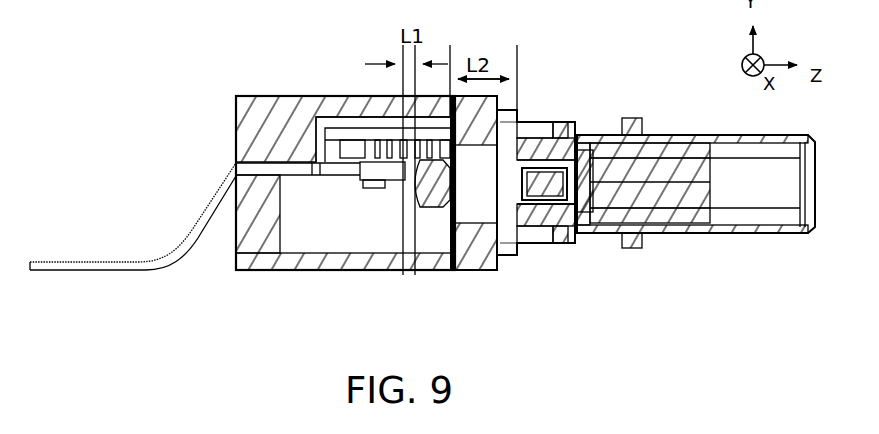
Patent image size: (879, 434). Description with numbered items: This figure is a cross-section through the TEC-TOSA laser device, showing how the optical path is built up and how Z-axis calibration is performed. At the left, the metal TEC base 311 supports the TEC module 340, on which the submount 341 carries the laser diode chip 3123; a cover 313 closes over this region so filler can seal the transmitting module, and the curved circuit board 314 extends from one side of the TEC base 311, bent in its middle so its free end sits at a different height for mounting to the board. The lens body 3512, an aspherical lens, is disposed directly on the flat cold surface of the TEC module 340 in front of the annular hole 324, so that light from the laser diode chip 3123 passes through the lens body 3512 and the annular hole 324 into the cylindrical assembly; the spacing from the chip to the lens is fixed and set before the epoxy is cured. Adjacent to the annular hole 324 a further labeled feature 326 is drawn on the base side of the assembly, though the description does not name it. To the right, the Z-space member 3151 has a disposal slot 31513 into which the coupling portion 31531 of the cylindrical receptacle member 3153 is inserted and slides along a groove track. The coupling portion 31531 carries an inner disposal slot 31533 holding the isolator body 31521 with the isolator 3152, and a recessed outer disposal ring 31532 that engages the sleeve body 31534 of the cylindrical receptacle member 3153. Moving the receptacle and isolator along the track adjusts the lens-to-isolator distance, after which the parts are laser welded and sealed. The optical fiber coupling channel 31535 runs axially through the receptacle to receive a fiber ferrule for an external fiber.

The TEC base 311 is at (258, 113).
The cover 313 is at (293, 260).
The curved circuit board 314 is at (97, 262).
The TEC module 340 is at (378, 137).
The submount 341 is at (365, 182).
The laser diode chip 3123 is at (390, 188).
The lens body 3512 is at (417, 205).
The annular hole 324 is at (478, 257).
The neck portion 326 is at (498, 260).
The Z-space member 3151 is at (608, 214).
The isolator 3152 is at (530, 140).
The coupling portion 31531 is at (547, 165).
The inner disposal slot 31533 is at (575, 132).
The cylindrical receptacle member 3153 is at (688, 127).
The disposal slot 31513 is at (543, 243).
The isolator body 31521 is at (568, 243).
The recessed outer disposal ring 31532 is at (603, 240).
The sleeve body 31534 is at (695, 233).
The optical fiber coupling channel 31535 is at (755, 233).